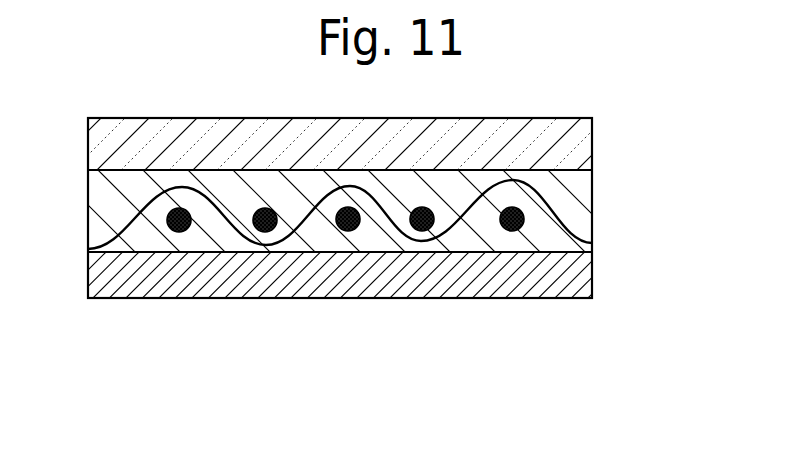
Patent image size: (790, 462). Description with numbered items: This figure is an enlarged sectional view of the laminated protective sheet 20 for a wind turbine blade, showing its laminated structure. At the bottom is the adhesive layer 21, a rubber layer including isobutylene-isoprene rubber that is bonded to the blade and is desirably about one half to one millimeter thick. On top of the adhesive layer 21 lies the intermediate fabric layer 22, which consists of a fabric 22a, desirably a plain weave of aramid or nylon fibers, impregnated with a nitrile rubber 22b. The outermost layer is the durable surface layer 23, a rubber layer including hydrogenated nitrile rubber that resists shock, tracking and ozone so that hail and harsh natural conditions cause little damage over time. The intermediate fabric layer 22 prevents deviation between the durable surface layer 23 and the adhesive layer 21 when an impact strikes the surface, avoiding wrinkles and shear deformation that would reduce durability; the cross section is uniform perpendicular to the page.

The laminated protective sheet 20 is at (673, 117).
The adhesive layer 21 is at (613, 248).
The intermediate fabric layer 22 is at (613, 173).
The fabric 22a is at (228, 227).
The nitrile rubber 22b is at (243, 205).
The durable surface layer 23 is at (613, 117).